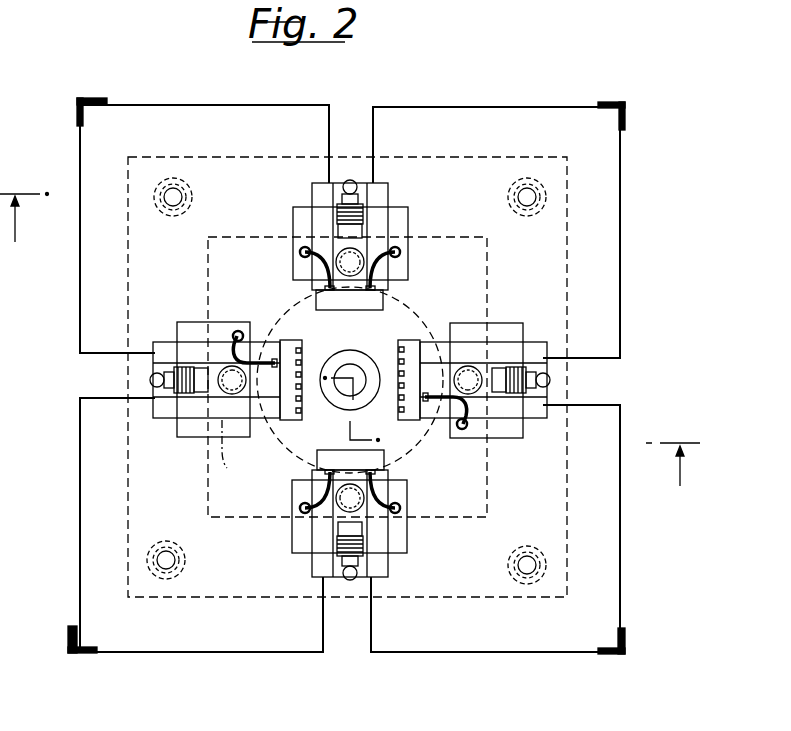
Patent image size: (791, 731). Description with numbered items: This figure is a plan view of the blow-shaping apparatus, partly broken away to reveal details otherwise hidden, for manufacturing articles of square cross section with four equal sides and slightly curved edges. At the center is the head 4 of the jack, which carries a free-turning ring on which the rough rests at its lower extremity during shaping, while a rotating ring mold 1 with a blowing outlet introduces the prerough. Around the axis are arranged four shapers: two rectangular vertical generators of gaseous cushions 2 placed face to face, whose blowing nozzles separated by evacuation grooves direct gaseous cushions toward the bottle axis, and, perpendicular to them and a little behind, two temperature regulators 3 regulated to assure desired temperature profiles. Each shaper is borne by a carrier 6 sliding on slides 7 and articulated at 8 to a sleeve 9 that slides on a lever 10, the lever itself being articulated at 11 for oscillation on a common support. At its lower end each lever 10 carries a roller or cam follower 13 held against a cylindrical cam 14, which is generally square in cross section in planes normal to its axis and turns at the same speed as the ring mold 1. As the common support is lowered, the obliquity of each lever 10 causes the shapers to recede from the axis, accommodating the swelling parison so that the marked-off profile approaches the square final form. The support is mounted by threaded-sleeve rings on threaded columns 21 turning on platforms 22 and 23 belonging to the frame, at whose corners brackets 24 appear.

The rotating ring mold 1 is at (350, 327).
The generator of gaseous cushions 2 is at (414, 344).
The temperature regulator 3 is at (376, 304).
The head 4 is at (337, 407).
The carrier 6 is at (530, 346).
The slide 7 is at (403, 226).
The articulation 8 is at (360, 210).
The sleeve 9 is at (472, 424).
The lever 10 is at (547, 381).
The articulation 11 is at (236, 452).
The roller or cam follower 13 is at (320, 516).
The cylindrical cam 14 is at (399, 432).
The threaded column 21 is at (528, 198).
The platform 22 is at (568, 243).
The platform 23 is at (500, 112).
The corner bracket 24 is at (625, 116).